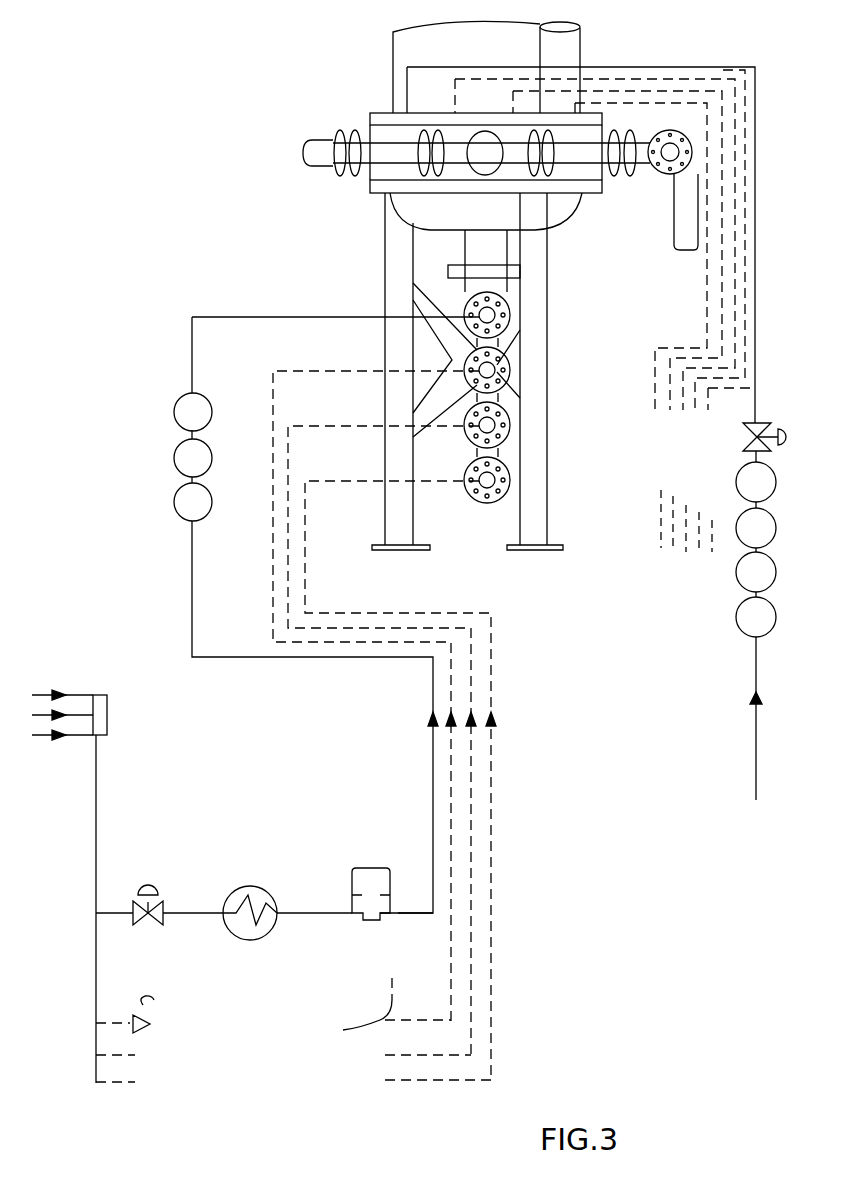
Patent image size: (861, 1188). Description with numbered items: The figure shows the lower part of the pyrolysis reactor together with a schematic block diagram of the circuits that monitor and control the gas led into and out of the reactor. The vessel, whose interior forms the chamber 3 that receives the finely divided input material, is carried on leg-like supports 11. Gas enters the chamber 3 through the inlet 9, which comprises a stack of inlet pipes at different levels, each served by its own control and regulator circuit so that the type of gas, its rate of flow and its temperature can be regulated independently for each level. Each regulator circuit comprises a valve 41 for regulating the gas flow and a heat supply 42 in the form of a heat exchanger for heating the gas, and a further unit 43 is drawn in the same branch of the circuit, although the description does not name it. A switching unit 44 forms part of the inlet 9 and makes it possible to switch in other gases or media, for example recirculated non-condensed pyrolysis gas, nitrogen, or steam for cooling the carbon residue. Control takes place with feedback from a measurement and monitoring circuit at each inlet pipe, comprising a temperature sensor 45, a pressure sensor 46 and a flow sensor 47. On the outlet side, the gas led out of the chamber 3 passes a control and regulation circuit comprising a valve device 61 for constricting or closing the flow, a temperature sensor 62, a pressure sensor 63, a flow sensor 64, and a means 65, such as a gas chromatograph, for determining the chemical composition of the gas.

The chamber 3 is at (476, 50).
The inlet 9 is at (262, 222).
The leg-like supports 11 is at (537, 262).
The valve 41 is at (147, 886).
The heat supply 42 is at (257, 890).
The filter 43 is at (363, 880).
The switching unit 44 is at (97, 695).
The temperature sensor 45 is at (175, 405).
The pressure sensor 46 is at (175, 456).
The flow sensor 47 is at (175, 502).
The valve device 61 is at (770, 430).
The temperature sensor 62 is at (777, 470).
The pressure sensor 63 is at (777, 517).
The flow sensor 64 is at (777, 562).
The means for determination of chemical composition 65 is at (777, 606).